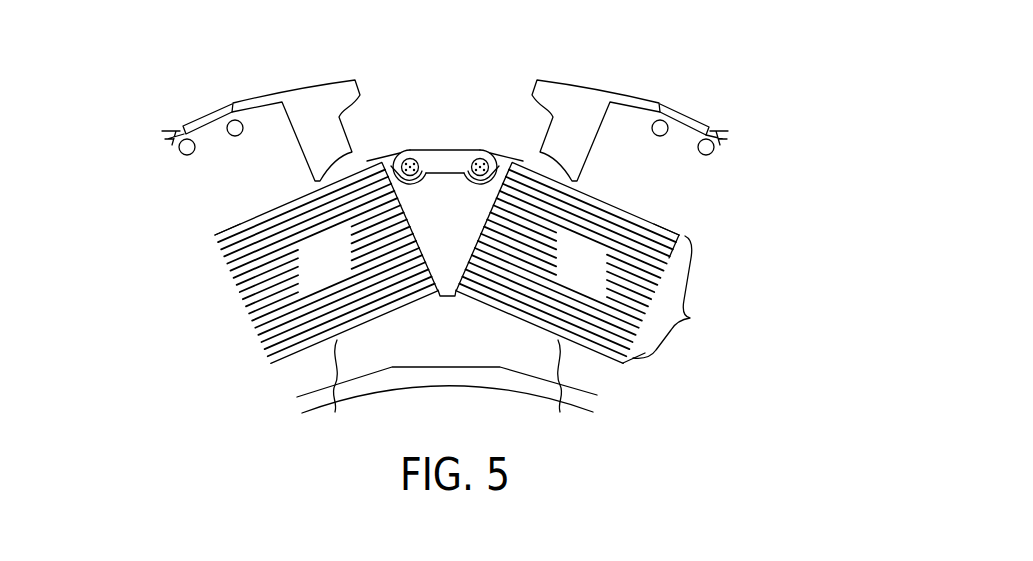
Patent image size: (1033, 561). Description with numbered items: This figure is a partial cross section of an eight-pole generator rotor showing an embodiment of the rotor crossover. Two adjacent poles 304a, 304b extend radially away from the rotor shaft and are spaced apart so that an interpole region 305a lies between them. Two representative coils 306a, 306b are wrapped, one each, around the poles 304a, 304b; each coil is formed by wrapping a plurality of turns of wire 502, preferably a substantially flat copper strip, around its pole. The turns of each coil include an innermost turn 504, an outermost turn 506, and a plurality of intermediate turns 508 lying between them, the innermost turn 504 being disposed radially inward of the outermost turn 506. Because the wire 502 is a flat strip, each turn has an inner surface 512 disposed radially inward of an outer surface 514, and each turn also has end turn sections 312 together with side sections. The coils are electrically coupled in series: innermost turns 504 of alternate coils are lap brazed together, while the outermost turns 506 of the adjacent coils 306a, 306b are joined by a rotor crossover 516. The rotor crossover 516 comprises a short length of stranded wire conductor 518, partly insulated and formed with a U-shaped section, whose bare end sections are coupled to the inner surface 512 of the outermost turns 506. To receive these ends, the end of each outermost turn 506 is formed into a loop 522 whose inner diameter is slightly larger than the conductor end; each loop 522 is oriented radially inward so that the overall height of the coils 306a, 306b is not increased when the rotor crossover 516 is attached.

The pole 304a is at (322, 82).
The pole 304b is at (592, 67).
The interpole region 305a is at (498, 92).
The coil 306a is at (216, 234).
The coil 306b is at (679, 236).
The end turn section 312 is at (349, 270).
The wire 502 is at (389, 311).
The innermost turn 504 is at (628, 362).
The outermost turn 506 is at (690, 238).
The intermediate turns 508 is at (691, 297).
The inner surface 512 is at (221, 248).
The outer surface 514 is at (276, 206).
The rotor crossover 516 is at (448, 140).
The stranded wire conductor 518 is at (416, 176).
The loop 522 is at (401, 140).